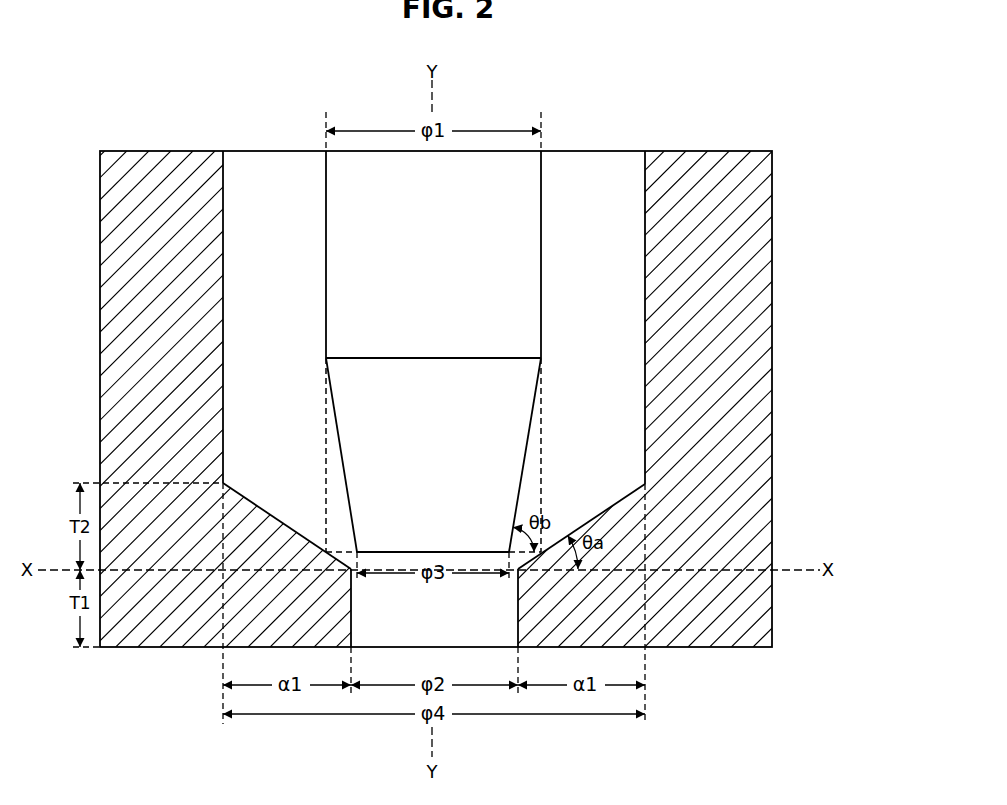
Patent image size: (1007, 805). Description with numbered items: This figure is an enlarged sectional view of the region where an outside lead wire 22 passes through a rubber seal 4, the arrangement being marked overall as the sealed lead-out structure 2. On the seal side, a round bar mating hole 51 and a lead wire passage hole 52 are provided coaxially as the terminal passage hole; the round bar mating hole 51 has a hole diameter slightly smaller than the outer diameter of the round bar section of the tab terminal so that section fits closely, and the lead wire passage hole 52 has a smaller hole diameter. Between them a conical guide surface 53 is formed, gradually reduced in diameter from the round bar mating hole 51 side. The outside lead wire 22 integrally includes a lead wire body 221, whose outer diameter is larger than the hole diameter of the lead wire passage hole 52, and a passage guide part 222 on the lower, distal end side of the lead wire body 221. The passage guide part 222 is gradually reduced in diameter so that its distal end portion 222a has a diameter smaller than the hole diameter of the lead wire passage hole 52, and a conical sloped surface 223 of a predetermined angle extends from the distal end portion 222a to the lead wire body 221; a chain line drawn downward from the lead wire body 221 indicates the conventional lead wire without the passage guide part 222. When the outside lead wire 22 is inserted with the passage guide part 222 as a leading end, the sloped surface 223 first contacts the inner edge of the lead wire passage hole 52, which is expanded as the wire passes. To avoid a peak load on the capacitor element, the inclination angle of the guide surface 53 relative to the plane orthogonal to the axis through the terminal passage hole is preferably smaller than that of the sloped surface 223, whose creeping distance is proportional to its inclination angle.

The nozzle 2 is at (555, 133).
The rubber seal 4 is at (150, 149).
The outside lead wire 22 is at (544, 240).
The lead wire body 221 is at (541, 290).
The passage guide part 222 is at (529, 432).
The distal end portion 222a is at (465, 555).
The sloped surface 223 is at (340, 449).
The round bar mating hole 51 is at (645, 343).
The lead wire passage hole 52 is at (352, 603).
The guide surface 53 is at (601, 513).